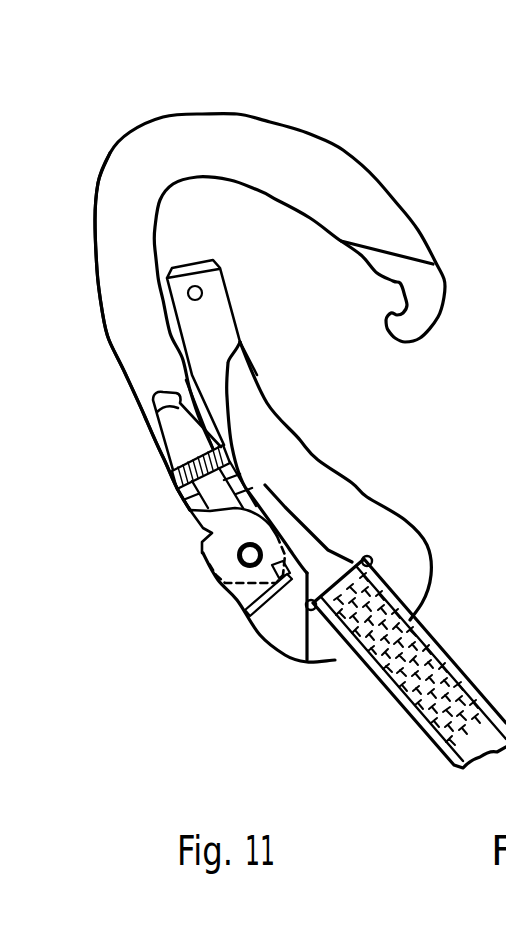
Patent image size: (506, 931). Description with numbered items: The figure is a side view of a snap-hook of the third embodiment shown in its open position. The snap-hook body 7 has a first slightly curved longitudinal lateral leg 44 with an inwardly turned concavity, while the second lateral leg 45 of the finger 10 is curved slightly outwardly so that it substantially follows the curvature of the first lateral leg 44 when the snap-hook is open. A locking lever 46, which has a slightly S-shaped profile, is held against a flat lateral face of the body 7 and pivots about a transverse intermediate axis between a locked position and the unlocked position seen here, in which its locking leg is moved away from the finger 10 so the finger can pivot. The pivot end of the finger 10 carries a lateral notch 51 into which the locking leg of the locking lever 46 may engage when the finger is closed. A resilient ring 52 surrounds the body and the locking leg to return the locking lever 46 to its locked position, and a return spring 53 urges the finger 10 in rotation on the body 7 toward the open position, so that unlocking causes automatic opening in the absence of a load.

The snap-hook body 7 is at (125, 159).
The first lateral leg 44 is at (115, 287).
The second lateral leg 45 is at (290, 440).
The finger 10 is at (348, 507).
The locking lever 46 is at (172, 423).
The resilient ring 52 is at (175, 480).
The lateral notch 51 is at (208, 533).
The return spring 53 is at (247, 608).